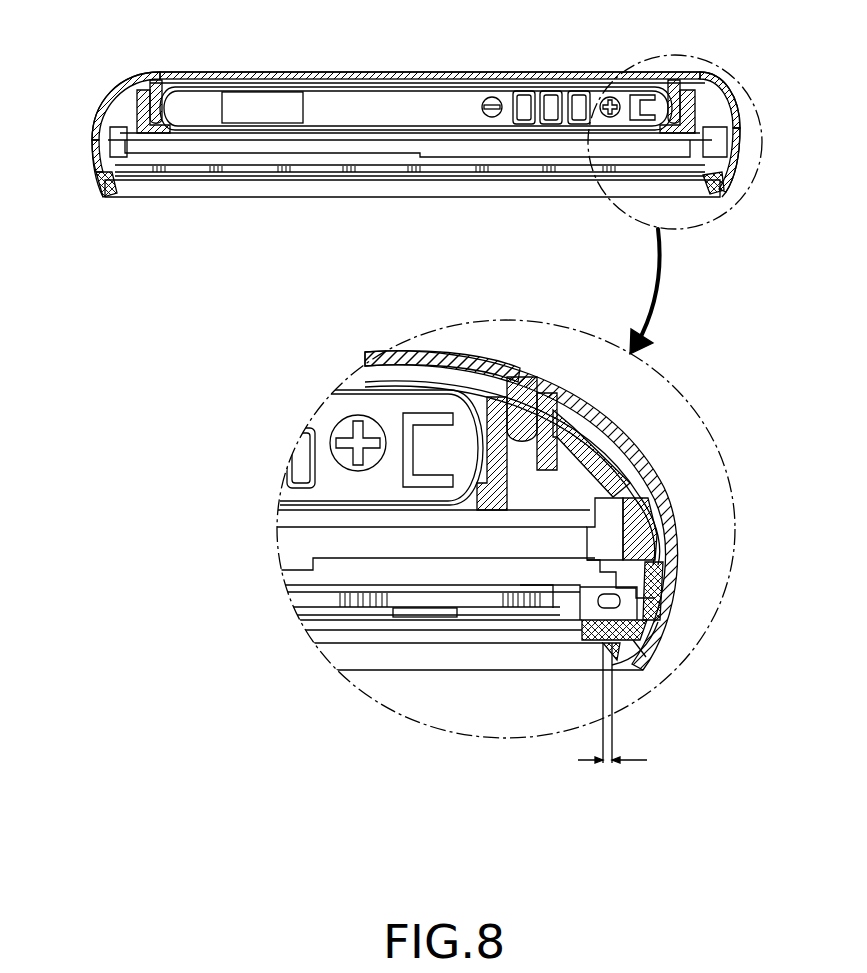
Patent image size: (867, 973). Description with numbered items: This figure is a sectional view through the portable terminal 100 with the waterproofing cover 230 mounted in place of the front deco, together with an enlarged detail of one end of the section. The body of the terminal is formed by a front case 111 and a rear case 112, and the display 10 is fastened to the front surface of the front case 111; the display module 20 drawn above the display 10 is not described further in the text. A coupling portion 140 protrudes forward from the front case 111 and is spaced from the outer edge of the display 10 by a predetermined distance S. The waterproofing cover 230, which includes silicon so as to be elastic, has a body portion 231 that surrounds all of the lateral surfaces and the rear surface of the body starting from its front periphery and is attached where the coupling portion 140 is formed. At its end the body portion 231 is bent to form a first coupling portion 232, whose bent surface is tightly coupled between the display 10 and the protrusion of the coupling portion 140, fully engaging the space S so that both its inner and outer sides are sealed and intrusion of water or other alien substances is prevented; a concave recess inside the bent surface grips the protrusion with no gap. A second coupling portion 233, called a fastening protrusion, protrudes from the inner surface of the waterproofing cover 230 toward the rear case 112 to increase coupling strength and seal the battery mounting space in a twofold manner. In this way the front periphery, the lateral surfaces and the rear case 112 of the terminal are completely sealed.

The portable terminal 100 is at (112, 68).
The display 10 is at (187, 190).
The display module 20 is at (352, 100).
The front case 111 is at (95, 180).
The rear case 112 is at (708, 103).
The coupling portion 140 is at (603, 663).
The waterproofing cover 230 is at (432, 72).
The body portion 231 is at (448, 362).
The first coupling portion 232 is at (630, 660).
The second coupling portion 233 is at (522, 414).
The predetermined distance S is at (612, 777).